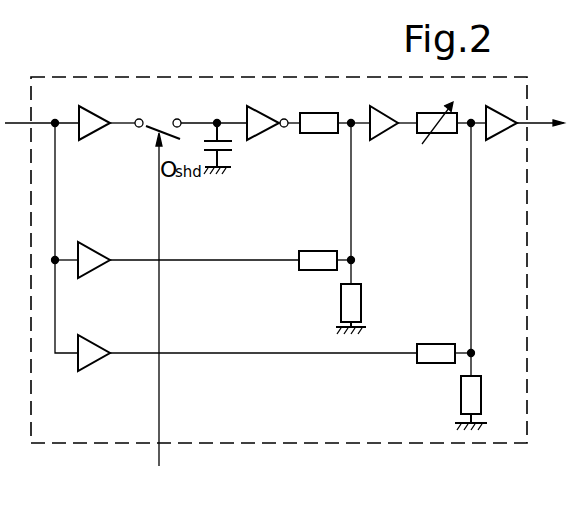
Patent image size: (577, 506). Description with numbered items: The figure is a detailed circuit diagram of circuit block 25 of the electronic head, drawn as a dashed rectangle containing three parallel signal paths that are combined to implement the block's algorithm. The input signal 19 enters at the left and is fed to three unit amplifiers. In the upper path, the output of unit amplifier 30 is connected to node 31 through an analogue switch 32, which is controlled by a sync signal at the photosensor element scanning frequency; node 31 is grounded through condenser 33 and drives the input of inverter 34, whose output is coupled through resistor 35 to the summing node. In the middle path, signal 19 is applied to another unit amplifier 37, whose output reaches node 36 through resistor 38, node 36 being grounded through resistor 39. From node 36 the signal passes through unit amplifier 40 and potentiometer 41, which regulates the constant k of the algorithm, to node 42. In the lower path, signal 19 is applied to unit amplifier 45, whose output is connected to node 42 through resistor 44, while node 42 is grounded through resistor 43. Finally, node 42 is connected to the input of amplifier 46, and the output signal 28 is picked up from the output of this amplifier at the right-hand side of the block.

The signal 19 is at (18, 121).
The circuit block 25 is at (121, 74).
The signal 28 is at (535, 125).
The unit amplifier 30 is at (91, 130).
The node 31 is at (217, 120).
The analogue switch 32 is at (153, 125).
The condenser 33 is at (229, 151).
The inverter 34 is at (258, 124).
The resistor 35 is at (315, 123).
The node 36 is at (350, 127).
The unit amplifier 37 is at (89, 263).
The resistor 38 is at (314, 256).
The resistor 39 is at (355, 306).
The unit amplifier 40 is at (377, 132).
The potentiometer 41 is at (442, 133).
The node 42 is at (472, 116).
The resistor 43 is at (474, 400).
The resistor 44 is at (432, 350).
The unit amplifier 45 is at (96, 345).
The amplifier 46 is at (491, 135).